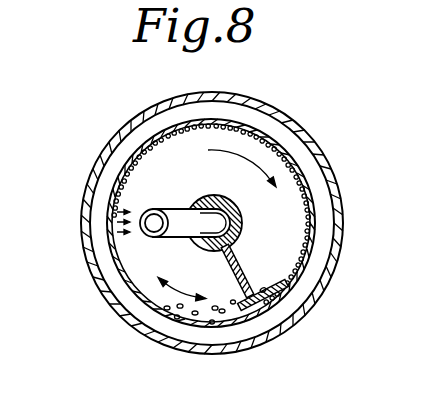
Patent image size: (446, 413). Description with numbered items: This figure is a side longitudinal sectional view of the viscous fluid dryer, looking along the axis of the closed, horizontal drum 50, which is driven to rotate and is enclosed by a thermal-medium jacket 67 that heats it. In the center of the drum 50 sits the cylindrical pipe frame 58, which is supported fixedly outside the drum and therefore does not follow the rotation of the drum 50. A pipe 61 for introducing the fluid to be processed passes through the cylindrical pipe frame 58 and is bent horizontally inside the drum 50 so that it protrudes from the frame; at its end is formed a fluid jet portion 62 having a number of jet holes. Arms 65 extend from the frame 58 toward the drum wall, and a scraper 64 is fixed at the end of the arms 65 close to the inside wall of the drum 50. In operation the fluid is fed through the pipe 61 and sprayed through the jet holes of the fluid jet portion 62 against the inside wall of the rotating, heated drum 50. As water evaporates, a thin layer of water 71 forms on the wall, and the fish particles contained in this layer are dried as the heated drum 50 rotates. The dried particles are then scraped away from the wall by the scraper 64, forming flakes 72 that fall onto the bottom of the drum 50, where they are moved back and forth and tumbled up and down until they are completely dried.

The drum 50 is at (297, 160).
The cylindrical pipe frame 58 is at (241, 222).
The pipe 61 is at (180, 220).
The fluid jet portion 62 is at (148, 209).
The scraper 64 is at (283, 300).
The arms 65 is at (243, 273).
The thermal-medium jacket 67 is at (343, 226).
The thin layer of water 71 is at (112, 224).
The flakes 72 is at (222, 313).